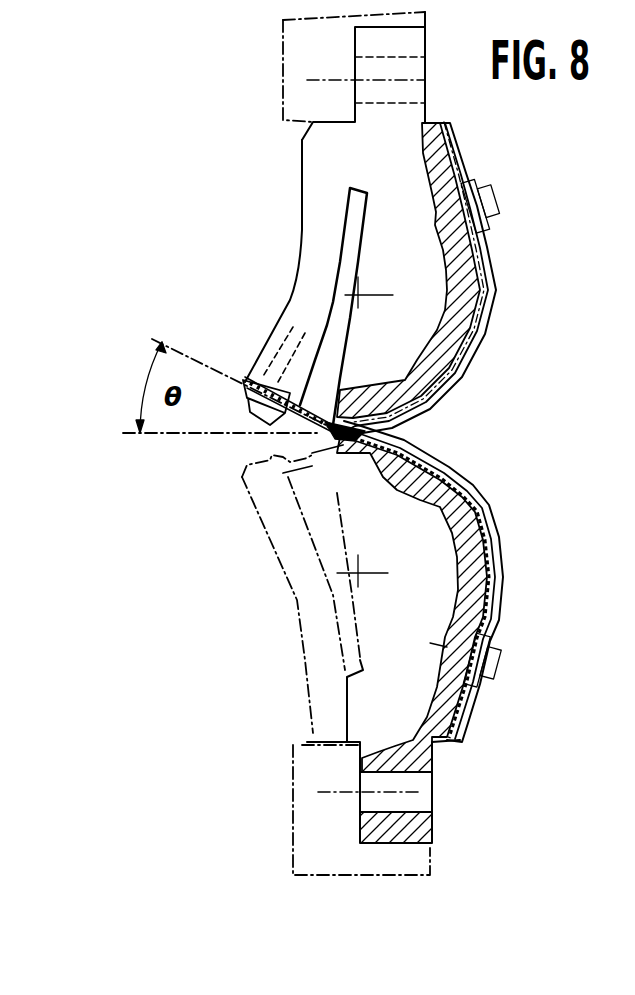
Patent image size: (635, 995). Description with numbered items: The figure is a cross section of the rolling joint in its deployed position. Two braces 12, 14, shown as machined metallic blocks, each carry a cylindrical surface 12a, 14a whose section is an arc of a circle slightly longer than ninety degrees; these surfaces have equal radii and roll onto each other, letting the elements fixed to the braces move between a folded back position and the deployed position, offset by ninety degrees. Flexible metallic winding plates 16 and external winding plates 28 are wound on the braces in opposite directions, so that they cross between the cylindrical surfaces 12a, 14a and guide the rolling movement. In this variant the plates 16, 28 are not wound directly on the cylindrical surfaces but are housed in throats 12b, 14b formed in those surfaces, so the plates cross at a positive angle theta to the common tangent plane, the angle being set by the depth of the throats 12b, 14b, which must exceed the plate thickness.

The brace 12 is at (347, 262).
The cylindrical surface 12a is at (493, 333).
The throat 12b is at (493, 295).
The winding plate 16 is at (463, 372).
The brace 14 is at (337, 682).
The cylindrical surface 14a is at (467, 484).
The throat 14b is at (467, 732).
The external winding plate 28 is at (478, 541).